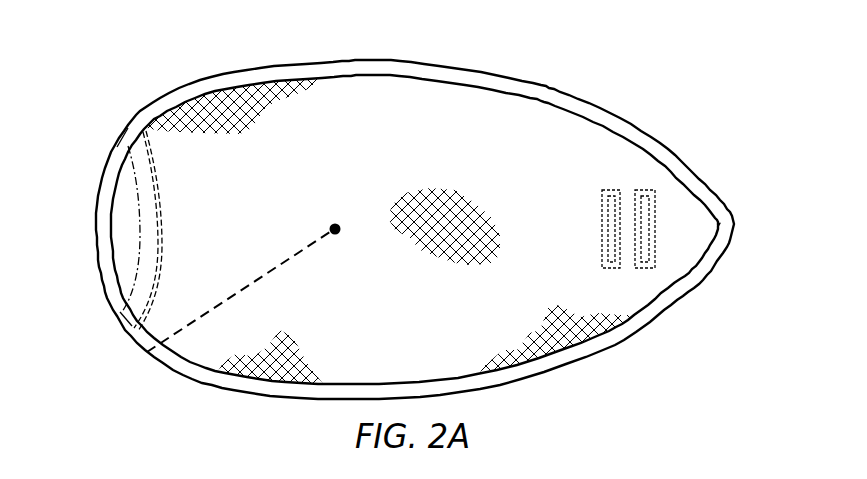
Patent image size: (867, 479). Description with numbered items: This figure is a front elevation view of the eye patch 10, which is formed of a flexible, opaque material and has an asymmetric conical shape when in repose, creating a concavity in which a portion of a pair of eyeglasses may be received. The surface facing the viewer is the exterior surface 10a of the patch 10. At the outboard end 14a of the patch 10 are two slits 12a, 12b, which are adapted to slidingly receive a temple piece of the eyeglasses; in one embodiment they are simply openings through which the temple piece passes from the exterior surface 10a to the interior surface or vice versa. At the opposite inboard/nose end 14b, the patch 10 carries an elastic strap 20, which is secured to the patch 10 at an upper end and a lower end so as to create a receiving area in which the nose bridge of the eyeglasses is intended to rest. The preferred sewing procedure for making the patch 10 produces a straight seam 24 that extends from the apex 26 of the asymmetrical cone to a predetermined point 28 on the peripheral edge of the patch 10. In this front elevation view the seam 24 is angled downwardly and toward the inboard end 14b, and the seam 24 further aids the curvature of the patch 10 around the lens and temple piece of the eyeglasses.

The eye patch 10 is at (413, 205).
The exterior surface 10a is at (401, 153).
The slit 12a is at (609, 204).
The slit 12b is at (648, 248).
The outboard end 14a is at (733, 220).
The inboard/nose end 14b is at (98, 222).
The elastic strap 20 is at (158, 186).
The straight seam 24 is at (257, 280).
The apex 26 is at (340, 233).
The predetermined point 28 is at (147, 352).